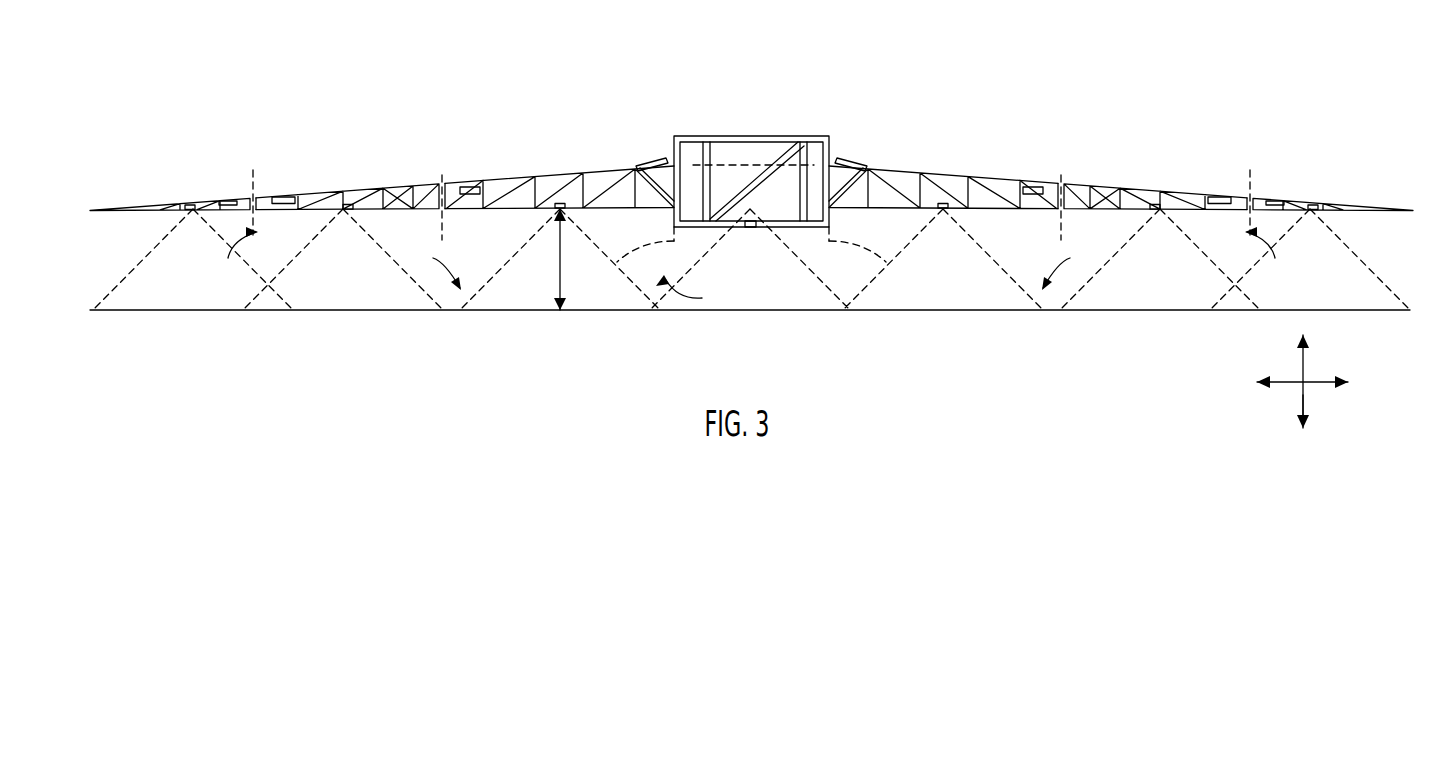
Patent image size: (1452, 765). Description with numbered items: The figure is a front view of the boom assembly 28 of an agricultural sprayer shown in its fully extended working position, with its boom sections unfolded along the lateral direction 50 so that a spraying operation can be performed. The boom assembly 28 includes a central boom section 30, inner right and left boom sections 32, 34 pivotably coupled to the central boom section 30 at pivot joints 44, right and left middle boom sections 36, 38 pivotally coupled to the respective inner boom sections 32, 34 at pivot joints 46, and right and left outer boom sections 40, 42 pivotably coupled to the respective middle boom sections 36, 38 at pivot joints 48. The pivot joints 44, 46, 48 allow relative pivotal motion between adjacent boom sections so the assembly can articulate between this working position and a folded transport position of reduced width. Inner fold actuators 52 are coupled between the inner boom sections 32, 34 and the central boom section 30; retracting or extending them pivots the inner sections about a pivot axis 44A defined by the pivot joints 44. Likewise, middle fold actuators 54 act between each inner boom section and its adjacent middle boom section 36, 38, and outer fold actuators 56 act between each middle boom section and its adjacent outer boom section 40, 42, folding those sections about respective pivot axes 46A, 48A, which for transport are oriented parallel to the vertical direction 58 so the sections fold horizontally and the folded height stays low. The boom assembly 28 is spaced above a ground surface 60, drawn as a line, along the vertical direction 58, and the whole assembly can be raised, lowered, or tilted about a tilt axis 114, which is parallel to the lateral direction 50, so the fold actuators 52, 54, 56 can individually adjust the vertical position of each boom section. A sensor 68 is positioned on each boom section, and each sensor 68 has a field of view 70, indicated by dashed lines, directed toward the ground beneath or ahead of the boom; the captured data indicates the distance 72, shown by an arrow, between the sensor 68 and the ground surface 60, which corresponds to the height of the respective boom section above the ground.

The boom assembly 28 is at (428, 121).
The central boom section 30 is at (747, 137).
The inner right boom section 32 is at (937, 172).
The inner left boom section 34 is at (545, 182).
The right middle boom section 36 is at (1092, 185).
The left middle boom section 38 is at (328, 190).
The right outer boom section 40 is at (1263, 198).
The left outer boom section 42 is at (227, 198).
The pivot joints 44 is at (674, 208).
The pivot axis 44A is at (738, 273).
The pivot joints 46 is at (442, 210).
The pivot axis 46A is at (753, 271).
The pivot joints 48 is at (258, 210).
The pivot axis 48A is at (754, 260).
The lateral direction 50 is at (1326, 386).
The inner fold actuators 52 is at (662, 157).
The middle fold actuators 54 is at (470, 190).
The outer fold actuators 56 is at (282, 197).
The vertical direction 58 is at (1302, 408).
The ground surface 60 is at (140, 316).
The sensors 68 is at (172, 205).
The field of view 70 is at (692, 292).
The distance 72 is at (558, 262).
The tilt axis 114 is at (790, 140).